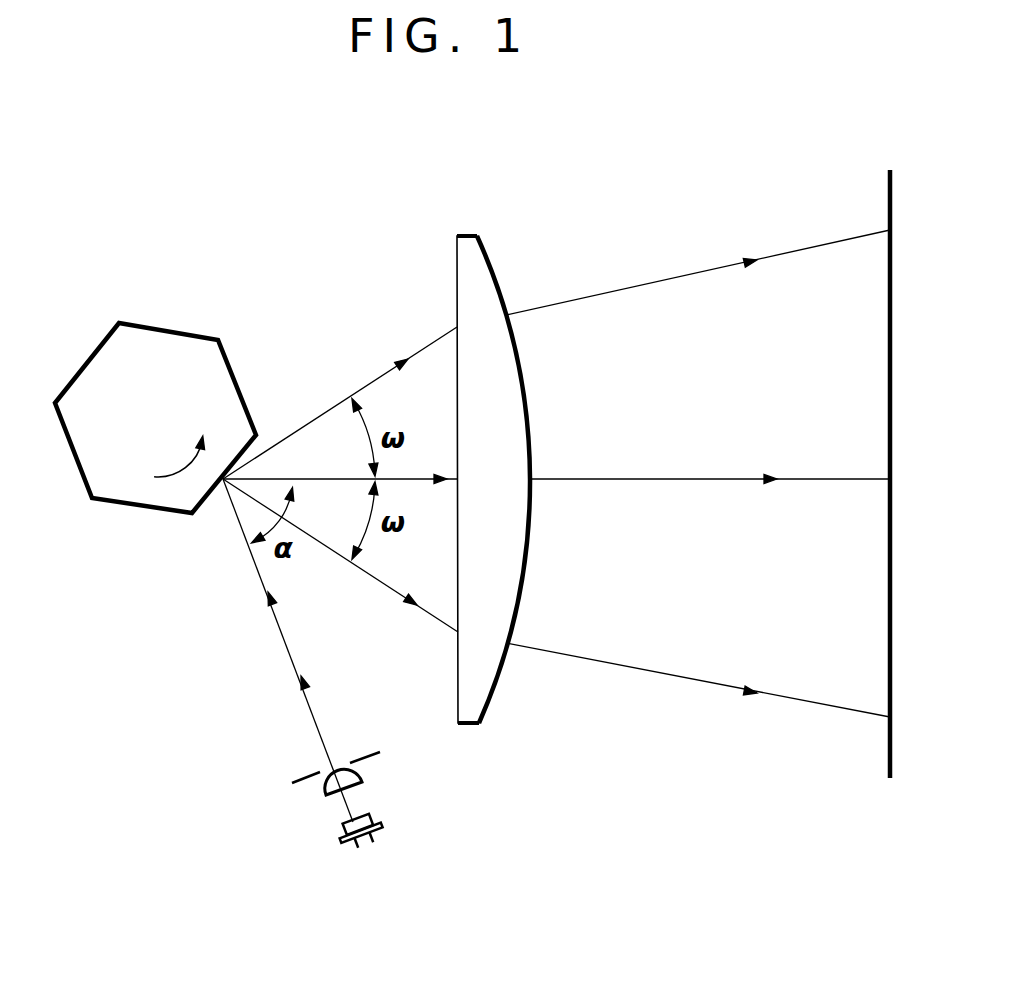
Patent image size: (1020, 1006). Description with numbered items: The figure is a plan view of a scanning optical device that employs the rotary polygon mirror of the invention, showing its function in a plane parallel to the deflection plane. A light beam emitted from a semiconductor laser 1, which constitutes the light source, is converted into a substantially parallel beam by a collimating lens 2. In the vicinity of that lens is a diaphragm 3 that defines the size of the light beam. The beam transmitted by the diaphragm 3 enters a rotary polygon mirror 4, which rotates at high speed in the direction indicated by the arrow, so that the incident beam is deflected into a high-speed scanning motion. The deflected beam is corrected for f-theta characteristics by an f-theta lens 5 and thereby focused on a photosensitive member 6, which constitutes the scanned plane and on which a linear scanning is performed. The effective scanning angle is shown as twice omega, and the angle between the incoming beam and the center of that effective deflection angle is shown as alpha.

The semiconductor laser 1 is at (387, 830).
The collimating lens 2 is at (360, 778).
The diaphragm 3 is at (298, 775).
The rotary polygon mirror 4 is at (170, 500).
The fθ lens 5 is at (490, 267).
The photosensitive member 6 is at (889, 198).